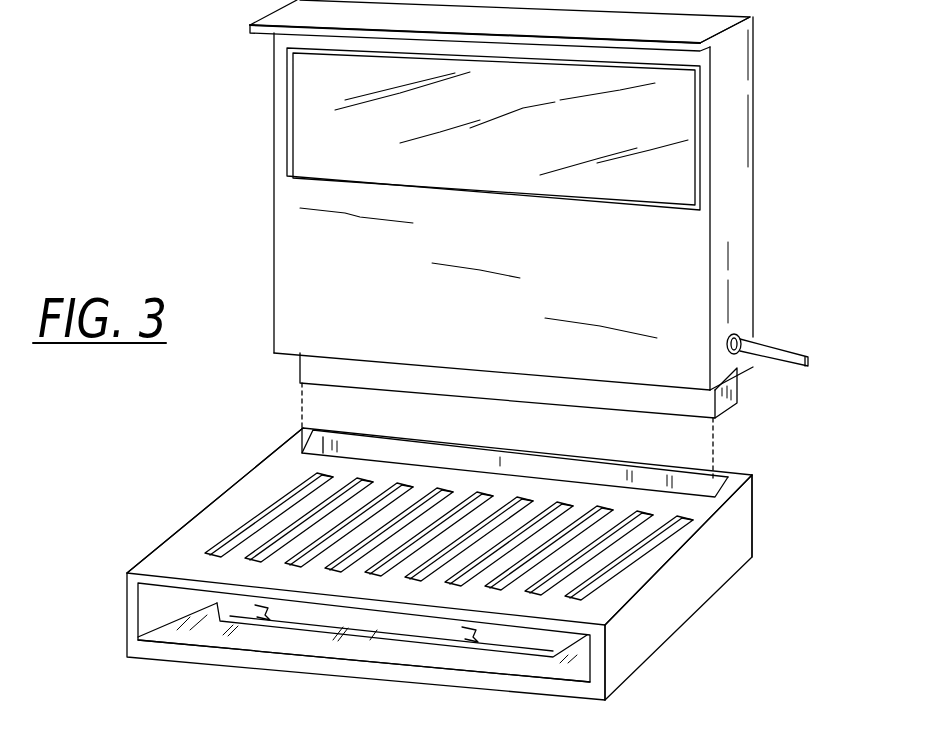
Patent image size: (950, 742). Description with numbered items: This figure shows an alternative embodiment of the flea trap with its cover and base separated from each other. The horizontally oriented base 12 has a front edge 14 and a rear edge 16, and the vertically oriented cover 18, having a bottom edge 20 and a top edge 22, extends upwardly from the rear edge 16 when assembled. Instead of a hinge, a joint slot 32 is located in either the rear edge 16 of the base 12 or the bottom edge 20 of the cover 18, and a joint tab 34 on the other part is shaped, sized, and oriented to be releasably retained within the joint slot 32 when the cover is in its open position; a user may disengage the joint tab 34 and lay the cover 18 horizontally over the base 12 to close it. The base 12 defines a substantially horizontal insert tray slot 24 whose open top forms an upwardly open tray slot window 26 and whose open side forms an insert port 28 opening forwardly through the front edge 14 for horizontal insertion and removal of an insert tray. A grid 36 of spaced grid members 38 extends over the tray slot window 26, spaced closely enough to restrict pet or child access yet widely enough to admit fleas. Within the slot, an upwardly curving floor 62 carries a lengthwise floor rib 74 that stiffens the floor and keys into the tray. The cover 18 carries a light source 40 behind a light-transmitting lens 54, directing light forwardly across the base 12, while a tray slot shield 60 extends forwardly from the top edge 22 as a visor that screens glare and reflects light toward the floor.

The base 12 is at (673, 614).
The front edge 14 is at (606, 700).
The rear edge 16 is at (755, 556).
The cover 18 is at (735, 208).
The bottom edge 20 is at (737, 370).
The top edge 22 is at (755, 22).
The insert tray slot 24 is at (152, 632).
The tray slot window 26 is at (257, 518).
The insert port 28 is at (212, 643).
The joint slot 32 is at (713, 458).
The joint tab 34 is at (730, 405).
The grid 36 is at (313, 492).
The grid members 38 is at (613, 540).
The light source 40 is at (307, 163).
The lens 54 is at (337, 108).
The tray slot shield 60 is at (250, 23).
The floor 62 is at (480, 636).
The floor rib 74 is at (262, 612).